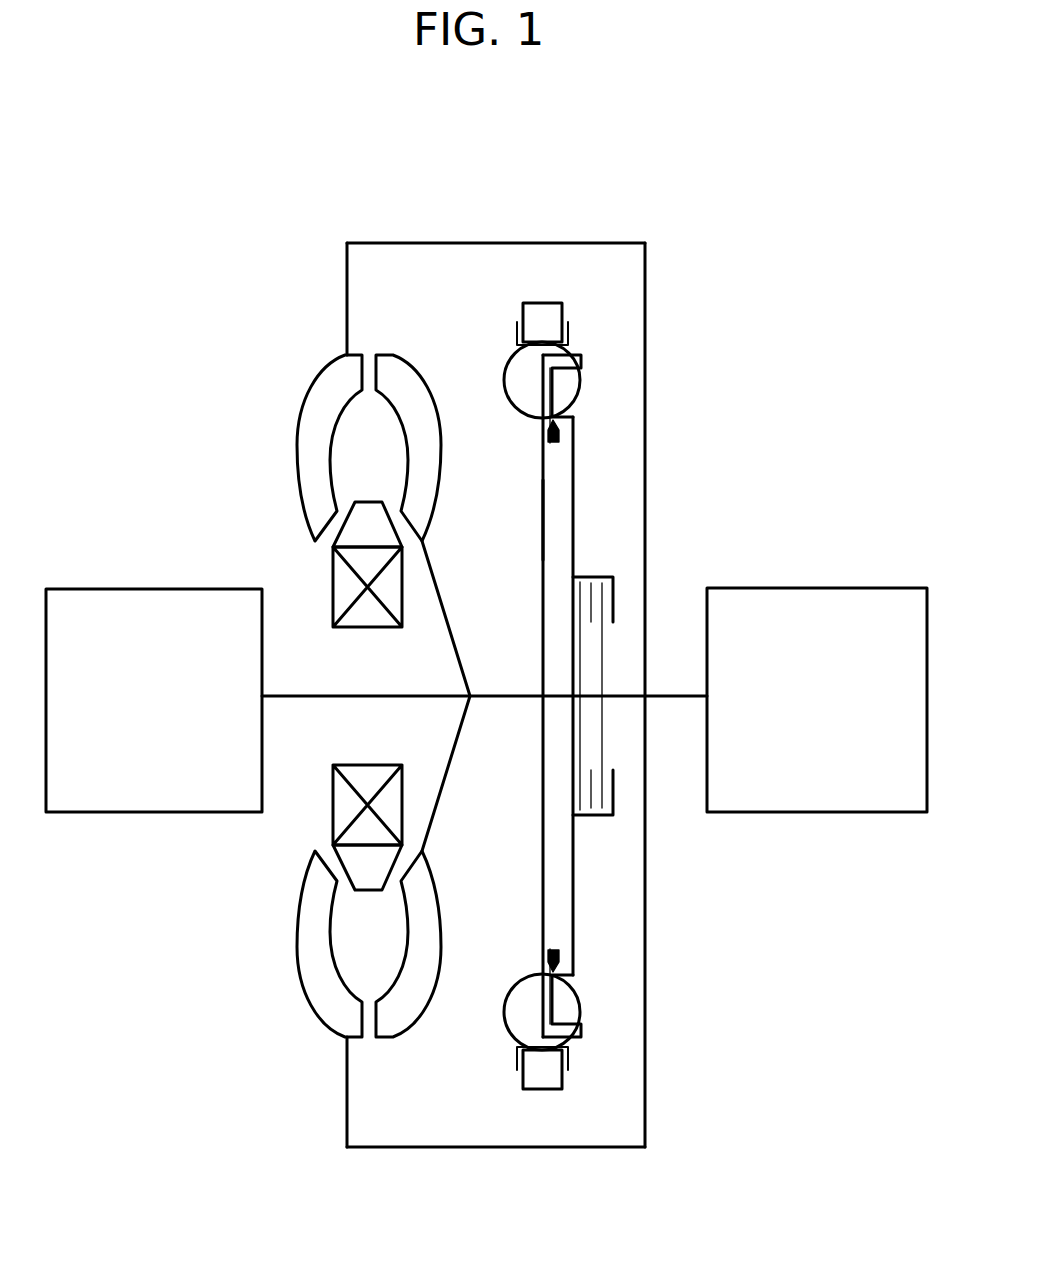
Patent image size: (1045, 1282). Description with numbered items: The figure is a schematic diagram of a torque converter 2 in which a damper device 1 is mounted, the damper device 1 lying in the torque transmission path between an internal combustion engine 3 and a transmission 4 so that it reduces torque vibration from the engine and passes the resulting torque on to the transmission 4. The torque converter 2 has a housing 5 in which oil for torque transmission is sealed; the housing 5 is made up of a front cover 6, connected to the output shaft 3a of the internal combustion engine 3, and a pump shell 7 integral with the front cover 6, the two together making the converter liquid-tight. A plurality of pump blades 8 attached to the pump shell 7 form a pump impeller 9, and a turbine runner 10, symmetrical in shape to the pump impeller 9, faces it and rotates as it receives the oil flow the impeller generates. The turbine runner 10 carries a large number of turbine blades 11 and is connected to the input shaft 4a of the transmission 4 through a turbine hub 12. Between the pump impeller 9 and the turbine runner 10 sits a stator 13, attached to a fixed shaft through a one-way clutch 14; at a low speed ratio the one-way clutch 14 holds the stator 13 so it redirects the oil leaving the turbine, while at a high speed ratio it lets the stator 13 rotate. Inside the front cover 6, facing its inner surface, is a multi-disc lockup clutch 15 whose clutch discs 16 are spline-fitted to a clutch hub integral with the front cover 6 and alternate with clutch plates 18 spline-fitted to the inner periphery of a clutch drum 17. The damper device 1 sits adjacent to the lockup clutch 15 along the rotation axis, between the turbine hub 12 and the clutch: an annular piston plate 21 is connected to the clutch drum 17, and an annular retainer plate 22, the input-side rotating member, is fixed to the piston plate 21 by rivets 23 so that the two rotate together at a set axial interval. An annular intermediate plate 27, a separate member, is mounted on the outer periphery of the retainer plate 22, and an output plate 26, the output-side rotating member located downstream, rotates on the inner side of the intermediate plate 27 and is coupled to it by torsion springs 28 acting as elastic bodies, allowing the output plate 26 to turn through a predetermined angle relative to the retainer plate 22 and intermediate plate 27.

The damper device 1 is at (527, 772).
The torque converter 2 is at (264, 256).
The internal combustion engine 3 is at (812, 588).
The output shaft 3a is at (689, 696).
The transmission 4 is at (150, 589).
The input shaft 4a is at (305, 696).
The housing 5 is at (496, 630).
The front cover 6 is at (645, 272).
The pump shell 7 is at (347, 273).
The pump blades 8 is at (342, 375).
The pump impeller 9 is at (314, 421).
The turbine runner 10 is at (329, 448).
The turbine blades 11 is at (418, 458).
The turbine hub 12 is at (443, 625).
The stator 13 is at (353, 530).
The one-way clutch 14 is at (345, 585).
The lockup clutch 15 is at (664, 692).
The clutch discs 16 is at (583, 729).
The clutch drum 17 is at (588, 822).
The clutch plates 18 is at (593, 793).
The piston plate 21 is at (575, 477).
The retainer plate 22 is at (568, 330).
The rivets 23 is at (557, 428).
The output plate 26 is at (541, 545).
The intermediate plate 27 is at (540, 303).
The torsion springs 28 is at (505, 375).